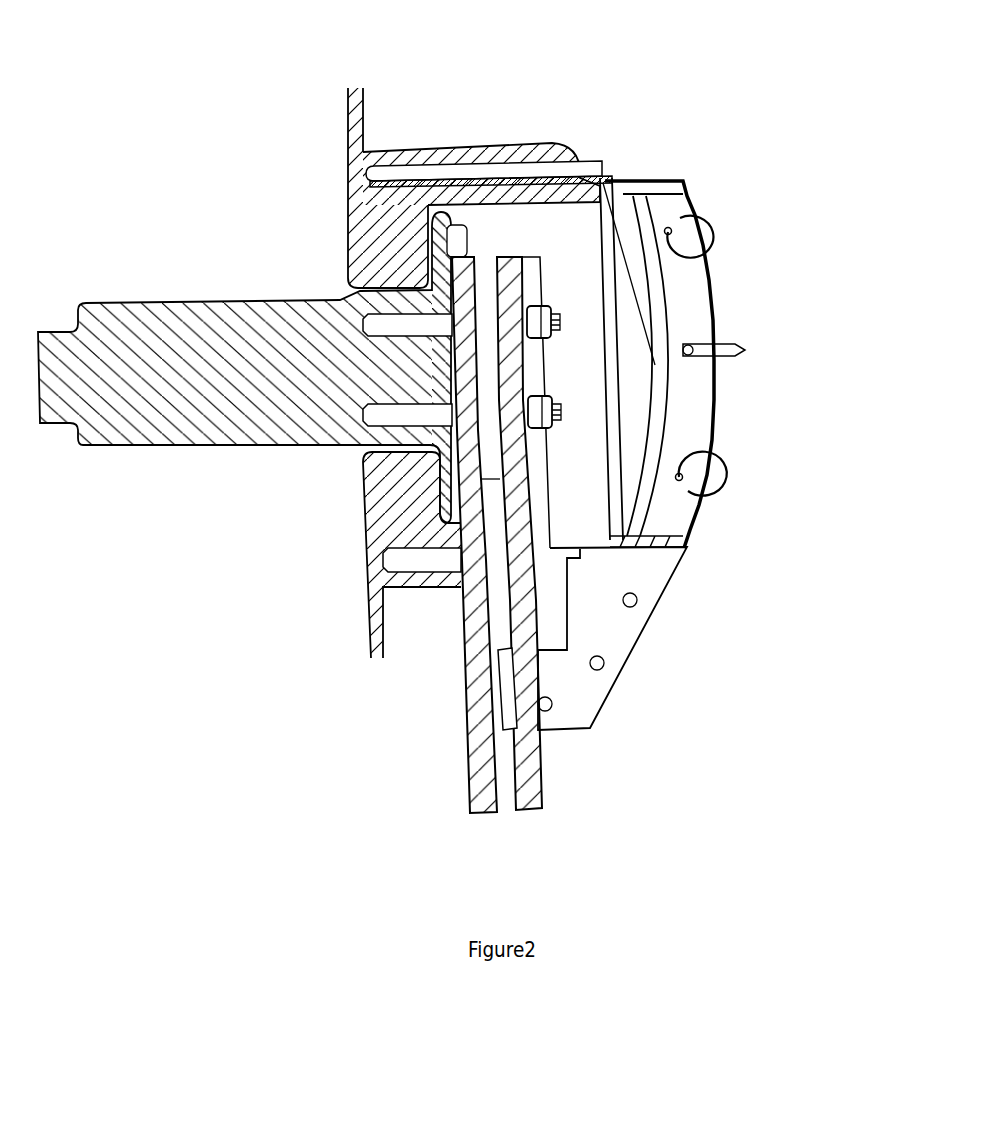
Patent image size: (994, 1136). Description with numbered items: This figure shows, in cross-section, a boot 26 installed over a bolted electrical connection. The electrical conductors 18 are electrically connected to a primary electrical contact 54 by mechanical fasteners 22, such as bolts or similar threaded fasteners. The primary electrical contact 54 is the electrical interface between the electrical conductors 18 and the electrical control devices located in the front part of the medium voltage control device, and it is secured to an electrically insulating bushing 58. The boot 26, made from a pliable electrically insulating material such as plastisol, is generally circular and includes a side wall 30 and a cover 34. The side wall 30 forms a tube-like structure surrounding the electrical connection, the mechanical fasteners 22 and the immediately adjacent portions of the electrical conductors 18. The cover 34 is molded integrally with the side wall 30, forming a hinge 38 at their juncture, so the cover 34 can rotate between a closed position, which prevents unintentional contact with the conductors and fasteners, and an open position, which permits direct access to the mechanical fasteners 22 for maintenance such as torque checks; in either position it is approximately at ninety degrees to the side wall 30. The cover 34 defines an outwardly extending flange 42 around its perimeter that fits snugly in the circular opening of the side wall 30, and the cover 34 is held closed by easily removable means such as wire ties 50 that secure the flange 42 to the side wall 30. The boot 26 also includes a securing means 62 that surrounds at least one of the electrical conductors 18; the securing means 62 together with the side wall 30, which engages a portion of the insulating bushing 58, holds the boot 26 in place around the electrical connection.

The electrical conductor 18 is at (526, 725).
The mechanical fastener 22 is at (568, 394).
The boot 26 is at (718, 320).
The side wall 30 is at (531, 167).
The cover 34 is at (636, 403).
The hinge 38 is at (605, 176).
The flange 42 is at (672, 214).
The wire tie 50 is at (735, 489).
The primary electrical contact 54 is at (205, 449).
The electrically insulating bushing 58 is at (457, 140).
The securing means 62 is at (507, 681).